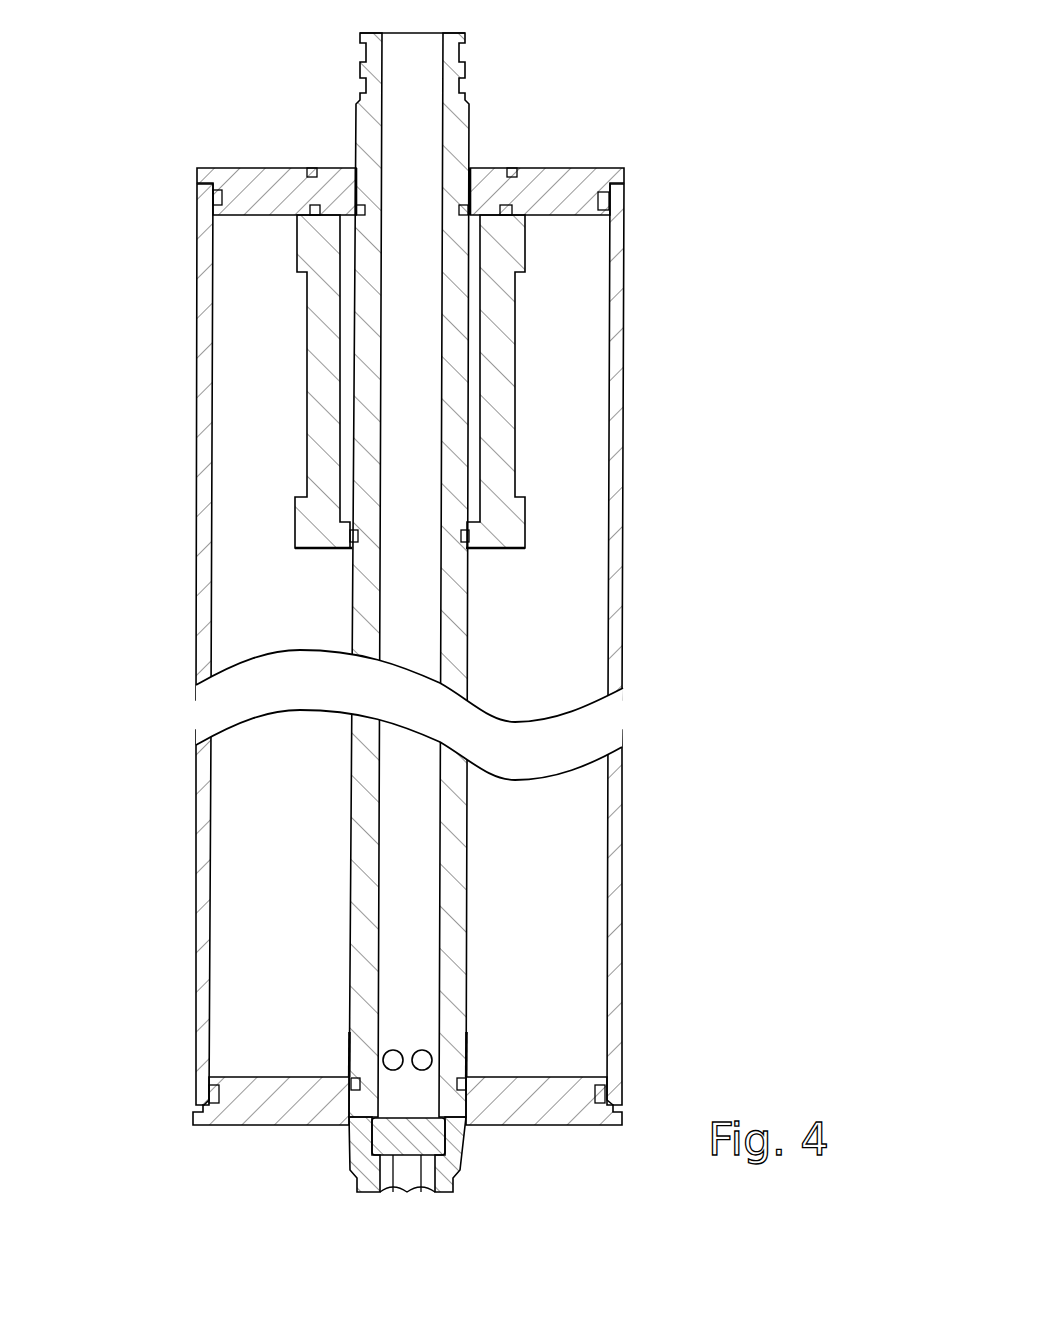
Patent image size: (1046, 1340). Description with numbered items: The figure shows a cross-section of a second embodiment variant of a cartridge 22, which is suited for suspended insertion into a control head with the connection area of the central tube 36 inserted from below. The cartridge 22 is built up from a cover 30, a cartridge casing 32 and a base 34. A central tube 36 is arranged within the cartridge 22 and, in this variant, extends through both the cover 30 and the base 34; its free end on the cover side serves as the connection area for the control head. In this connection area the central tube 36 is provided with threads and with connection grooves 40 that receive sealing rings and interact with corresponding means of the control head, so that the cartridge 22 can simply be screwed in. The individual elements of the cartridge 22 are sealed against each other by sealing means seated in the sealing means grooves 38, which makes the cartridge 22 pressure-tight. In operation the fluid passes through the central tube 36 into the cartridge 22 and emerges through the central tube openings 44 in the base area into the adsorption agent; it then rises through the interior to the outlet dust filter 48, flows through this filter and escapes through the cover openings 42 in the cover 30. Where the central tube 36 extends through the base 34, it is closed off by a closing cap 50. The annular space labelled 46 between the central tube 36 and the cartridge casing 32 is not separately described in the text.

The cartridge 22 is at (423, 631).
The cover 30 is at (565, 195).
The cartridge casing 32 is at (613, 843).
The base 34 is at (522, 1105).
The central tube 36 is at (257, 562).
The sealing means grooves 38 is at (357, 207).
The connection grooves 40 is at (360, 85).
The cover openings 42 is at (476, 185).
The central tube openings 44 is at (448, 1058).
The annular chamber 46 is at (565, 913).
The outlet dust filter 48 is at (490, 392).
The closing cap 50 is at (365, 1180).